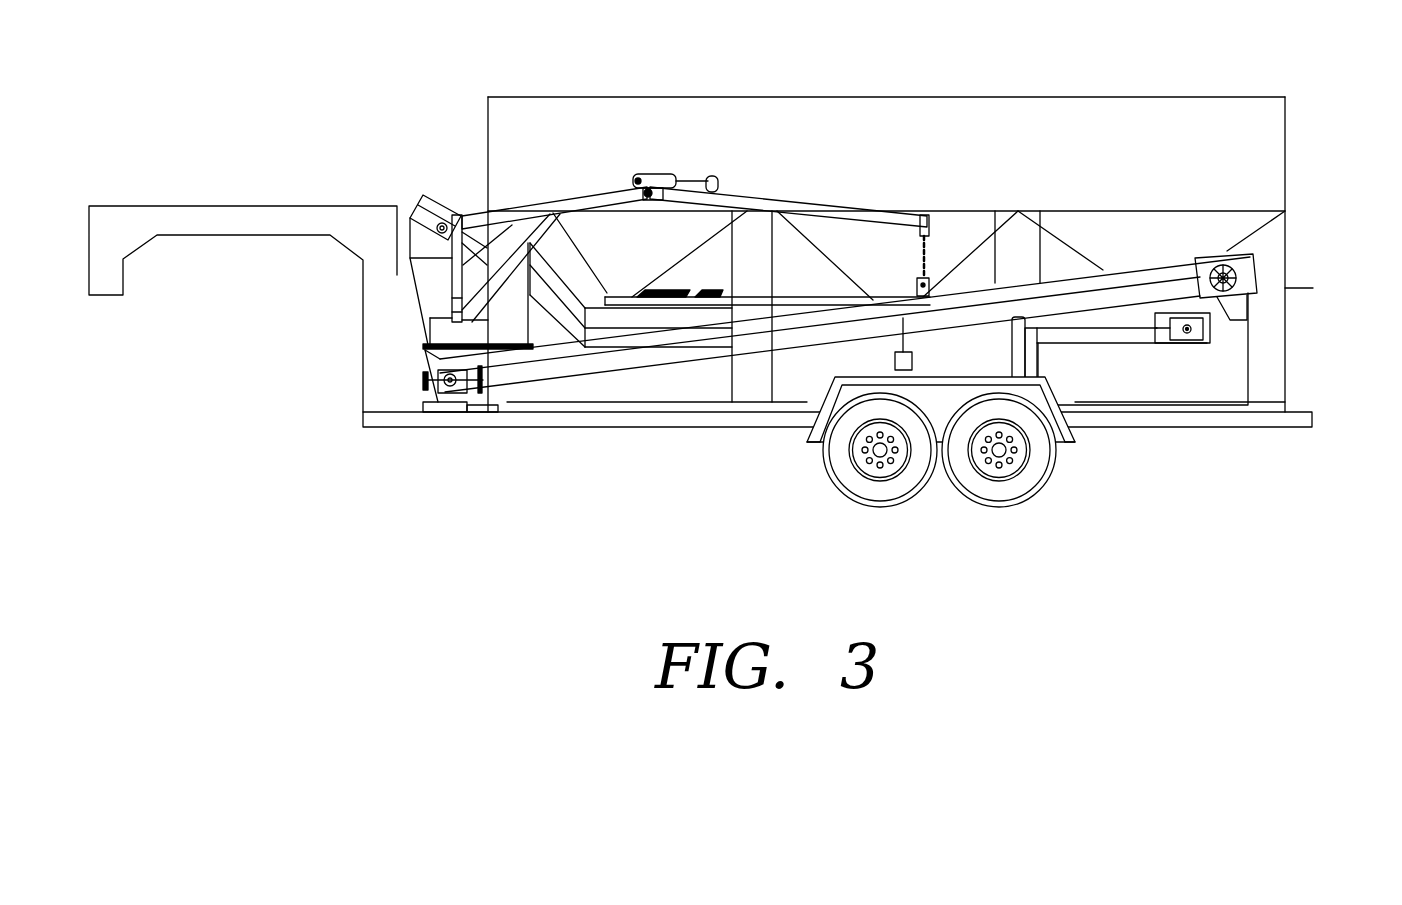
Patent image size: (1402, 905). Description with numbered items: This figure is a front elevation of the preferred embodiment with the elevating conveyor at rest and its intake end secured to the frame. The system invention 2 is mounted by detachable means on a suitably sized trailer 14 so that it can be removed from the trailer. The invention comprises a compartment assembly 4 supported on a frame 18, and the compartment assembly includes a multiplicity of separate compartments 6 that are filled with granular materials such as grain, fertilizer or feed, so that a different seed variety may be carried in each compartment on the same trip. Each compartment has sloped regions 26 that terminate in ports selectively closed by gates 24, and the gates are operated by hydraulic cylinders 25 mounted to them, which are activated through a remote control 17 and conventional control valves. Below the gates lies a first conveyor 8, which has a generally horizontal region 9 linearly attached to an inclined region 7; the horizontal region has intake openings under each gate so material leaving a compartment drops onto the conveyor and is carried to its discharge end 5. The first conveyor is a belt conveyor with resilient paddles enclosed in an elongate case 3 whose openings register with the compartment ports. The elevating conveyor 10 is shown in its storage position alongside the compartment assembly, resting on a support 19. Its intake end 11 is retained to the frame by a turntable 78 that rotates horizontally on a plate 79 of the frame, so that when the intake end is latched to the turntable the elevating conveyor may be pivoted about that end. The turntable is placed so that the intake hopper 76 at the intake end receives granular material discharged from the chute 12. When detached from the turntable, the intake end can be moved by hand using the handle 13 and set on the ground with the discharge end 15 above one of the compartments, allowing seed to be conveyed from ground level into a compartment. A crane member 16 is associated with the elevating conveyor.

The system invention 2 is at (710, 309).
The elongate case 3 is at (1148, 337).
The compartment assembly 4 is at (1285, 163).
The discharge end 5 is at (432, 197).
The compartments 6 is at (620, 123).
The inclined region 7 is at (543, 275).
The first conveyor 8 is at (1095, 337).
The horizontal region 9 is at (1045, 343).
The elevating conveyor 10 is at (578, 372).
The intake end 11 is at (502, 383).
The chute 12 is at (425, 277).
The handle 13 is at (440, 372).
The trailer 14 is at (1312, 418).
The discharge end 15 is at (1177, 275).
The crane member 16 is at (720, 203).
The remote control 17 is at (895, 362).
The frame 18 is at (1262, 343).
The support 19 is at (1018, 343).
The gates 24 is at (643, 305).
The hydraulic cylinders 25 is at (697, 308).
The sloped regions 26 is at (655, 250).
The intake hopper 76 is at (440, 353).
The turntable 78 is at (432, 412).
The plate 79 is at (483, 413).